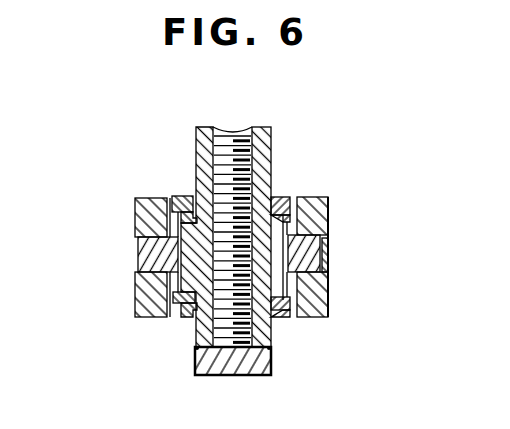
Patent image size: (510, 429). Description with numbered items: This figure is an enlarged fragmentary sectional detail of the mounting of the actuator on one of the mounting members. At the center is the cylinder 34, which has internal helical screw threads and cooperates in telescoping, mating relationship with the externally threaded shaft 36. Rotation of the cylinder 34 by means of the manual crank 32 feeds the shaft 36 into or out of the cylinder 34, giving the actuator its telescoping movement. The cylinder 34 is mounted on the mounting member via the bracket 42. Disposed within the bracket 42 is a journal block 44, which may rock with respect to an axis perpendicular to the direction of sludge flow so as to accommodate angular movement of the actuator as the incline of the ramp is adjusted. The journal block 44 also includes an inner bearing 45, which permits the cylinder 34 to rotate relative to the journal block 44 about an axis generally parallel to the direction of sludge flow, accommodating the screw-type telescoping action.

The manual crank 32 is at (272, 362).
The cylinder 34 is at (268, 143).
The shaft 36 is at (233, 132).
The bracket 42 is at (137, 199).
The journal block 44 is at (137, 250).
The inner bearing 45 is at (283, 198).